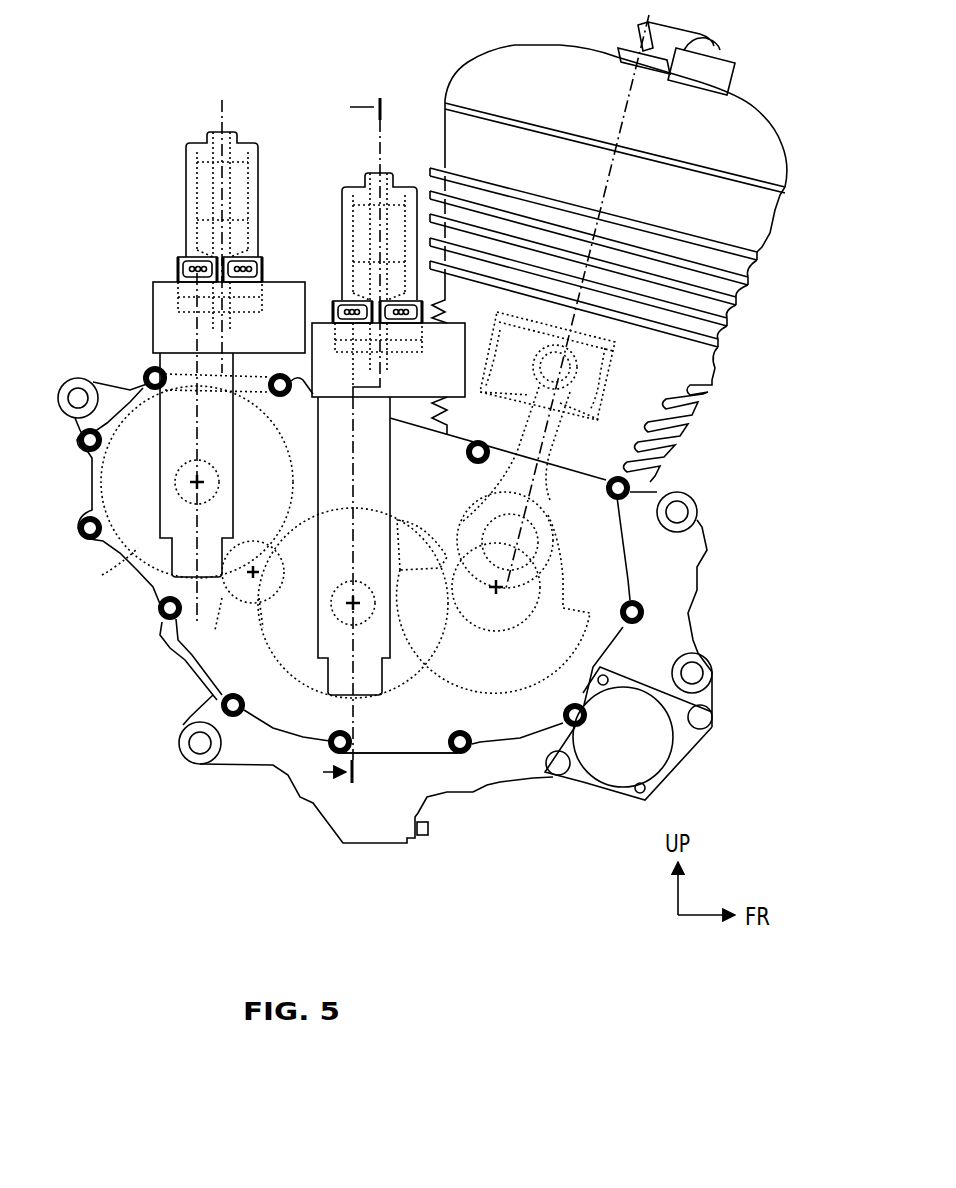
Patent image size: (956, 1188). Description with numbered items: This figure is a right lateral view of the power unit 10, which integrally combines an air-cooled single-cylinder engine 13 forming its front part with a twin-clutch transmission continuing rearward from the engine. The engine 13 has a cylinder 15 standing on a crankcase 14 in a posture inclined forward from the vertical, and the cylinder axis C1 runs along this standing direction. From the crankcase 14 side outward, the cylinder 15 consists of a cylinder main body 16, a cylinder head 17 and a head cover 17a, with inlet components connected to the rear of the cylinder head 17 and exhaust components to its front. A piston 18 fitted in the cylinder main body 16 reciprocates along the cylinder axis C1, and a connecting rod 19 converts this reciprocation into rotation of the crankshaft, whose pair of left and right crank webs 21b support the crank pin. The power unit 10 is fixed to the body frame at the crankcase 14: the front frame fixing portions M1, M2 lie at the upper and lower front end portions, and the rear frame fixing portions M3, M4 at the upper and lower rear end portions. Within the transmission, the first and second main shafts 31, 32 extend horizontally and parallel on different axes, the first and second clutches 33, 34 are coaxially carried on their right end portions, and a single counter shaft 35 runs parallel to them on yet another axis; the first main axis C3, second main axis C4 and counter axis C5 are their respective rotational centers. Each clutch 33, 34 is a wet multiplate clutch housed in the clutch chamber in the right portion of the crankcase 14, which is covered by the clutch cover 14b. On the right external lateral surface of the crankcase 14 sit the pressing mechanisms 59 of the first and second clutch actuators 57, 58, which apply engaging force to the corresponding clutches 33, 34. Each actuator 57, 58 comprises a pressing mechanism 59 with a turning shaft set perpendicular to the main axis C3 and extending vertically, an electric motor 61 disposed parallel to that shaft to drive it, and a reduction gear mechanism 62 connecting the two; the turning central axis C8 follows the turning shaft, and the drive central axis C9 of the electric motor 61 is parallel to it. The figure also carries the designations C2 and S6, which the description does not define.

The power unit 10 is at (427, 580).
The engine 13 is at (427, 580).
The crankcase 14 is at (355, 561).
The clutch cover 14b is at (355, 561).
The cylinder 15 is at (608, 301).
The cylinder main body 16 is at (608, 301).
The cylinder head 17 is at (745, 288).
The head cover 17a is at (755, 108).
The piston 18 is at (625, 355).
The connecting rod 19 is at (550, 442).
The crank webs 21b is at (398, 734).
The first main shaft 31 is at (353, 603).
The second main shaft 32 is at (197, 482).
The first clutch 33 is at (254, 711).
The second clutch 34 is at (106, 571).
The counter shaft 35 is at (242, 597).
The first clutch actuator 57 is at (371, 257).
The second clutch actuator 58 is at (215, 215).
The pressing mechanism 59 is at (150, 370).
The electric motor 61 is at (258, 150).
The reduction gear mechanism 62 is at (165, 287).
The cylinder axis C1 is at (621, 118).
The crankshaft axis C2 is at (497, 588).
The first main axis C3 is at (353, 603).
The second main axis C4 is at (197, 482).
The counter axis C5 is at (249, 582).
The turning central axis C8 is at (200, 448).
The drive central axis C9 is at (222, 100).
The front frame fixing portion M1 is at (688, 507).
The front frame fixing portion M2 is at (712, 673).
The rear frame fixing portion M3 is at (79, 377).
The rear frame fixing portion M4 is at (186, 758).
The section line S6 is at (346, 446).